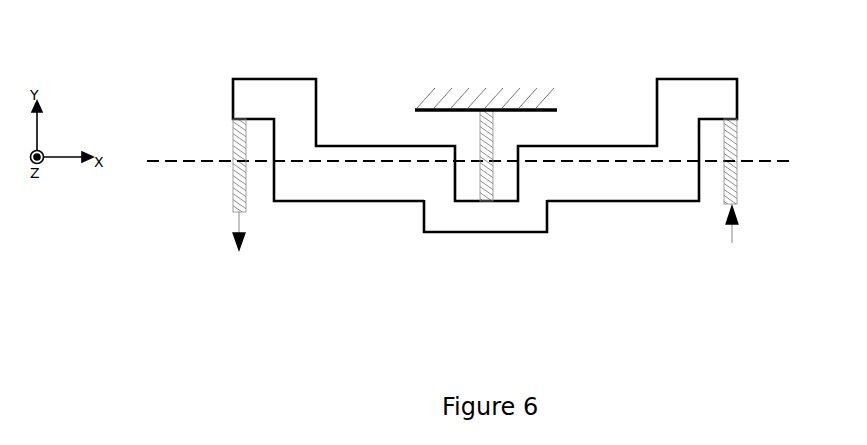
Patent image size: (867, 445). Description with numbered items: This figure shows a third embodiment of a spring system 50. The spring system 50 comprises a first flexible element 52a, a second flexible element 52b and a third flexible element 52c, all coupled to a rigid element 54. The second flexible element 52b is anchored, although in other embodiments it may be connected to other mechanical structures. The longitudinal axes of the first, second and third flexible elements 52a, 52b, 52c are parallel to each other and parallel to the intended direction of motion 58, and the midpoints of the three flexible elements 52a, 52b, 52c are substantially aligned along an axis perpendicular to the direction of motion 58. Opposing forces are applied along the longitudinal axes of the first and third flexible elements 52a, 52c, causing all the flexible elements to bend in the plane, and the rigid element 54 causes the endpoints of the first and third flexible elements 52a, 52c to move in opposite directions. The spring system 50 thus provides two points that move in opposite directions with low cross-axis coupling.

The spring system 50 is at (153, 83).
The first flexible element 52a is at (243, 180).
The second flexible element 52b is at (493, 150).
The third flexible element 52c is at (735, 145).
The rigid element 54 is at (484, 221).
The direction of motion 58 is at (238, 258).